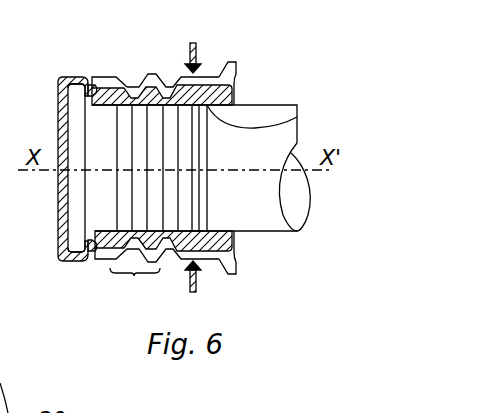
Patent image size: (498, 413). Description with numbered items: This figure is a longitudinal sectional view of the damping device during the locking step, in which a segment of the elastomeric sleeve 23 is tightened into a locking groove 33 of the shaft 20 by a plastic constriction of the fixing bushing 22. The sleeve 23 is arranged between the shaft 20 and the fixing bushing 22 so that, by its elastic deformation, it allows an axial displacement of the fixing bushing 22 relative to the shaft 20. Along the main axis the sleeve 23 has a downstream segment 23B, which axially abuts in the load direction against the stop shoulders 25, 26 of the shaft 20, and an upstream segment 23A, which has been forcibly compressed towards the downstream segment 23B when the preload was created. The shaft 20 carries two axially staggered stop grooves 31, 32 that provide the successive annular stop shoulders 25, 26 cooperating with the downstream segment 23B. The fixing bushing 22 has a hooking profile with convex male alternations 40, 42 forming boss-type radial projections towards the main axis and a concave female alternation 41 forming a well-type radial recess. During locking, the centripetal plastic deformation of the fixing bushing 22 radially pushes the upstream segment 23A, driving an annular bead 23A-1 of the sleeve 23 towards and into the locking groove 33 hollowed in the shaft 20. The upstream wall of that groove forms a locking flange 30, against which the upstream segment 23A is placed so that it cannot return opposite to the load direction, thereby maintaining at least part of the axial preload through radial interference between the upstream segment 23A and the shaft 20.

The shaft 20 is at (270, 113).
The fixing bushing 22 is at (99, 78).
The sleeve 23 is at (235, 252).
The upstream segment 23A is at (235, 294).
The annular bead 23A-1 is at (294, 116).
The downstream segment 23B is at (135, 286).
The stop shoulder 25 is at (149, 227).
The stop shoulder 26 is at (116, 224).
The locking flange 30 is at (210, 224).
The stop groove 31 is at (163, 124).
The stop groove 32 is at (131, 140).
The locking groove 33 is at (206, 214).
The convex male alternation 40 is at (175, 73).
The concave female alternation 41 is at (132, 98).
The convex male alternation 42 is at (125, 82).